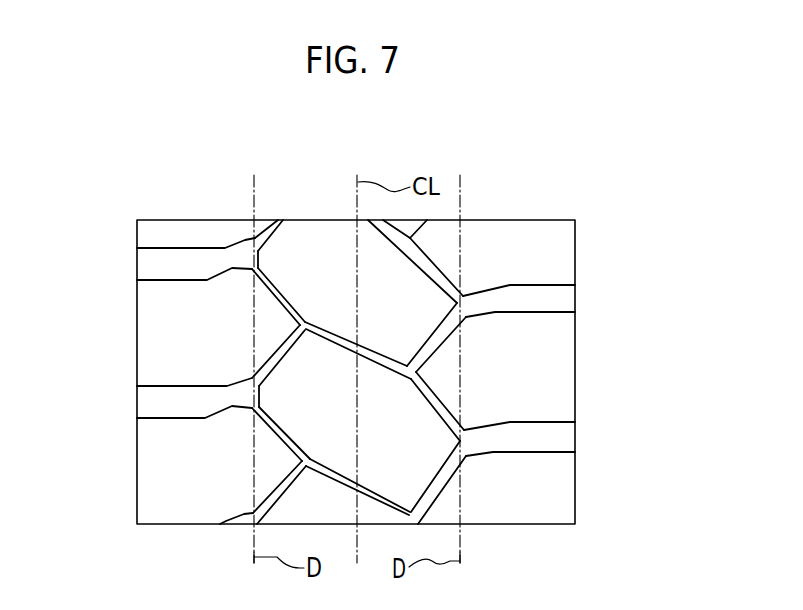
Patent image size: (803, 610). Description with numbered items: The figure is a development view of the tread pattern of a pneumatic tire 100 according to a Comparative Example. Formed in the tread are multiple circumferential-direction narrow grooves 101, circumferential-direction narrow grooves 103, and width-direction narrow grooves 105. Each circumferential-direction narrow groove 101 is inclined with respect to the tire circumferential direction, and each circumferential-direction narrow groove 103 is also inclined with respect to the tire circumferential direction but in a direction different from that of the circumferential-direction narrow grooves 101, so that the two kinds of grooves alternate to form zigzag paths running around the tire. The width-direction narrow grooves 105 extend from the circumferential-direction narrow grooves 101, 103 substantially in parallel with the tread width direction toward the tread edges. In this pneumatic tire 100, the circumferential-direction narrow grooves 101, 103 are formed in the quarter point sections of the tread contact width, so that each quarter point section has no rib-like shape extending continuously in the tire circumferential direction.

The pneumatic tire 100 is at (527, 182).
The circumferential-direction narrow groove 101 is at (373, 357).
The circumferential-direction narrow groove 103 is at (278, 223).
The width-direction narrow groove 105 is at (137, 265).